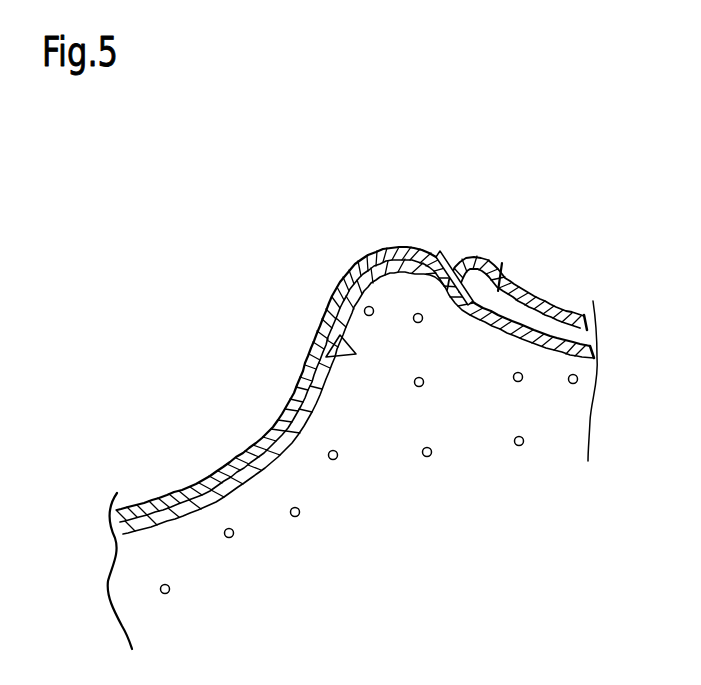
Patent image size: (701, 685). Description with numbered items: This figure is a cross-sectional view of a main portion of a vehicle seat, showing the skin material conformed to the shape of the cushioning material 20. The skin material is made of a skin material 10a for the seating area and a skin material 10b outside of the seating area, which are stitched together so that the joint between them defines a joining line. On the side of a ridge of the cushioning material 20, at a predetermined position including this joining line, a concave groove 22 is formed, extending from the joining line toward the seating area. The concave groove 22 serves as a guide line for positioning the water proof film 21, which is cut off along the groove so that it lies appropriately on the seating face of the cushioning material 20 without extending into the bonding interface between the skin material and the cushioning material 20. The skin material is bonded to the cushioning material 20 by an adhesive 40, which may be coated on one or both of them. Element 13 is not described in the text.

The skin material for the seating area 10a is at (264, 438).
The skin material outside of the seating area 10b is at (545, 292).
The joint portion 13 is at (501, 272).
The cushioning material 20 is at (381, 301).
The water proof film 21 is at (498, 290).
The concave groove 22 is at (346, 355).
The adhesive 40 is at (177, 528).